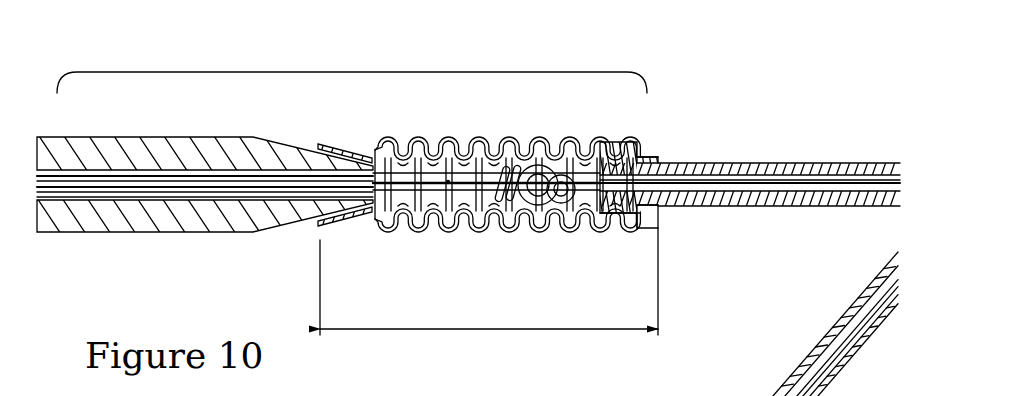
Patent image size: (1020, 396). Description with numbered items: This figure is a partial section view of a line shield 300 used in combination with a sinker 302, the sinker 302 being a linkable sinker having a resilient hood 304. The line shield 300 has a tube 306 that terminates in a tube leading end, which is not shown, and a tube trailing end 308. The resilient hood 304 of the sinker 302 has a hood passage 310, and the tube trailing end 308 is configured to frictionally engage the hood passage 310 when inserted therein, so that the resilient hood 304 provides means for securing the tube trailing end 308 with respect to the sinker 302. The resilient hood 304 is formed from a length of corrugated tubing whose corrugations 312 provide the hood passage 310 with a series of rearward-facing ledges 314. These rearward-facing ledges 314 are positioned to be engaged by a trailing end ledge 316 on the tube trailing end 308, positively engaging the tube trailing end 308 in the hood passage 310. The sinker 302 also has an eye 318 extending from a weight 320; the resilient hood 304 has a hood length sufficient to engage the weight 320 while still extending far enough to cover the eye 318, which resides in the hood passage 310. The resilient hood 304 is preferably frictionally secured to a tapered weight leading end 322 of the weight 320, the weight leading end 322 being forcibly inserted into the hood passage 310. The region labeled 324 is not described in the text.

The line shield 300 is at (703, 80).
The sinker 302 is at (352, 72).
The resilient hood 304 is at (472, 235).
The tube 306 is at (707, 160).
The tube trailing end 308 is at (640, 216).
The hood passage 310 is at (447, 181).
The corrugations 312 is at (534, 228).
The rearward-facing ledges 314 is at (638, 212).
The trailing end ledge 316 is at (650, 158).
The eye 318 is at (537, 165).
The weight 320 is at (160, 133).
The weight leading end 322 is at (306, 150).
The fitting 324 is at (587, 190).